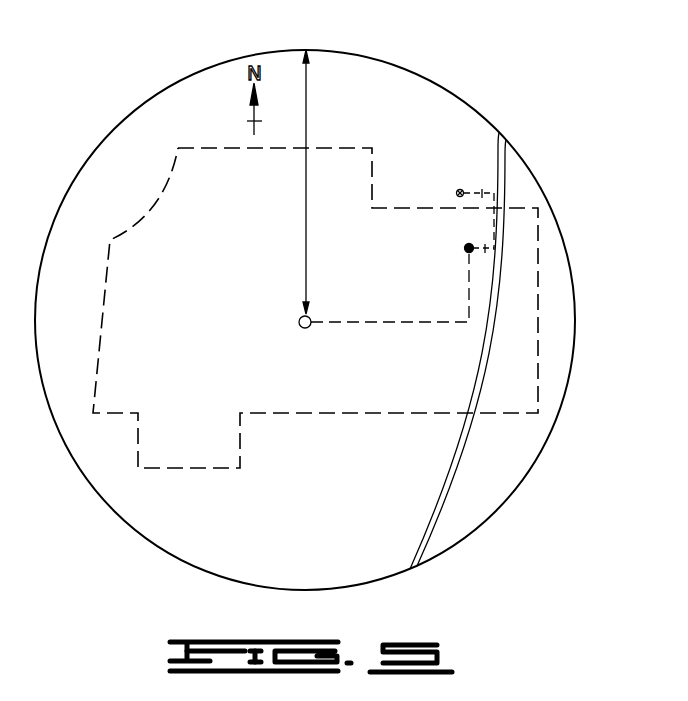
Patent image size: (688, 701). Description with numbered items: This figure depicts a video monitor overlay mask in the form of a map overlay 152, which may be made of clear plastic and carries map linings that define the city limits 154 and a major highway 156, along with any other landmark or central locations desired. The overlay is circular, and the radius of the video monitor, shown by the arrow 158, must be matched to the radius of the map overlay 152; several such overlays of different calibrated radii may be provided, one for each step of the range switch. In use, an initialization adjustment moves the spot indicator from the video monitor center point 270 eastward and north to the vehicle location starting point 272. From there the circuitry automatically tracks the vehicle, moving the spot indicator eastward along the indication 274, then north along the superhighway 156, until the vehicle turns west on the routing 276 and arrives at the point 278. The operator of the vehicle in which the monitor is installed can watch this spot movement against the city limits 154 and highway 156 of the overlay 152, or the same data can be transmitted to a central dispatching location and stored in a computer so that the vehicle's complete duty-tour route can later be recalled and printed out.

The map overlay 152 is at (437, 81).
The city limits 154 is at (322, 415).
The major highway 156 is at (445, 463).
The arrow 158 is at (308, 101).
The video monitor center point 270 is at (304, 329).
The vehicle location starting point 272 is at (465, 252).
The indication 274 is at (483, 247).
The routing 276 is at (481, 190).
The point 278 is at (459, 188).